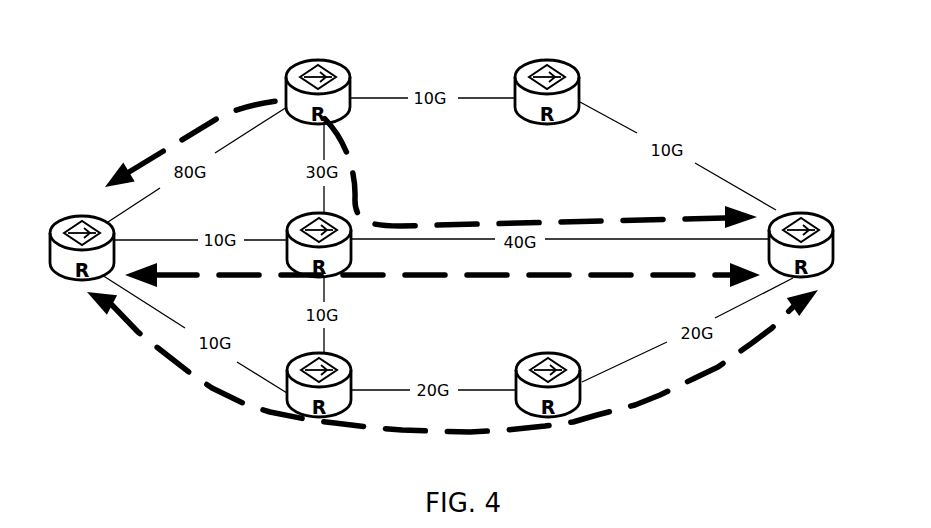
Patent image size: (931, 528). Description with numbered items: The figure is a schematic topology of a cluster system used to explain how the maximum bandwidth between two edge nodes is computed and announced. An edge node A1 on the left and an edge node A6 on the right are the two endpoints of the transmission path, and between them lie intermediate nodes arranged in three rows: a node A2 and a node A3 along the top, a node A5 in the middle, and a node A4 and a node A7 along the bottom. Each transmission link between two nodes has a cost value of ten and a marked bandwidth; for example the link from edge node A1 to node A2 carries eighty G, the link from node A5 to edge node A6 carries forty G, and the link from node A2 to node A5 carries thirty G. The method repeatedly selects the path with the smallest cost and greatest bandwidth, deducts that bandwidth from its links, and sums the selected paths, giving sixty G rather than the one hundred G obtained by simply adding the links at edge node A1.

The edge node A1 is at (82, 235).
The node A2 is at (318, 79).
The node A3 is at (547, 77).
The node A4 is at (319, 401).
The node A5 is at (333, 245).
The edge node A6 is at (817, 245).
The node A7 is at (548, 401).